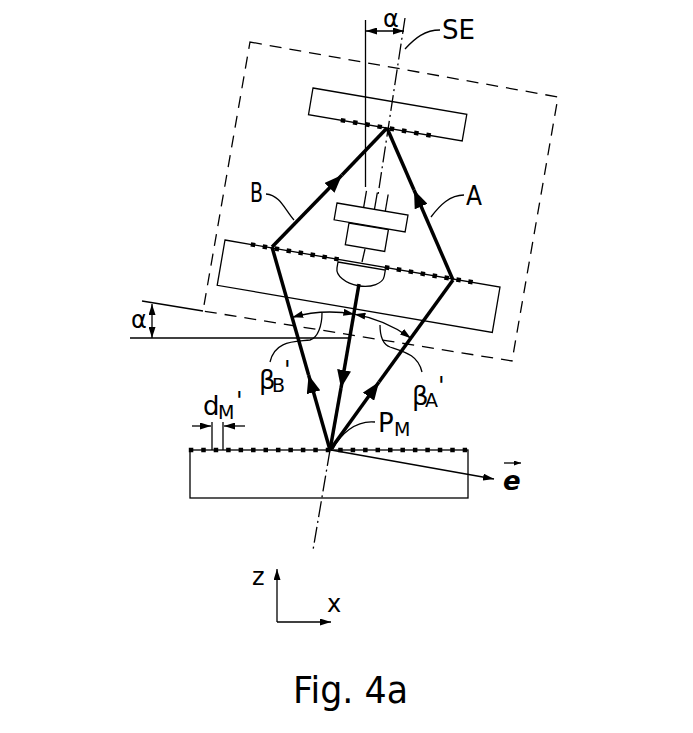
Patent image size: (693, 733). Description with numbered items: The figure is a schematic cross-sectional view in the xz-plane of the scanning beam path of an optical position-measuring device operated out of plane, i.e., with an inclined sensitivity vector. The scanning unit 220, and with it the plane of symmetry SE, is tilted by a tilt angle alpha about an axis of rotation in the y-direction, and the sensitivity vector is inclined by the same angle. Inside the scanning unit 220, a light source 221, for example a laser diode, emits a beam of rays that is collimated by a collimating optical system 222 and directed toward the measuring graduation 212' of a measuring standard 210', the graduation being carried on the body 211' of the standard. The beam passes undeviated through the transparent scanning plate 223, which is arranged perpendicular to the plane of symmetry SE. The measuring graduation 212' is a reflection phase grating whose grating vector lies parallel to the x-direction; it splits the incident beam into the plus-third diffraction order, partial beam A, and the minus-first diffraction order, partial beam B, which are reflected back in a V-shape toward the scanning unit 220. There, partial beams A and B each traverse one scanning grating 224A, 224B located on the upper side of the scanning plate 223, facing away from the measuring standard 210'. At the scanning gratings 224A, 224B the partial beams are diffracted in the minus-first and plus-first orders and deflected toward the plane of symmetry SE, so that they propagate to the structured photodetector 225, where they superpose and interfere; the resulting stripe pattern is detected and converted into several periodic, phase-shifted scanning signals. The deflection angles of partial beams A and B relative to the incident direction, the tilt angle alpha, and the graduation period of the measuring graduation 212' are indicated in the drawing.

The scanning unit 220 is at (214, 104).
The light source 221 is at (336, 205).
The collimating optical system 222 is at (340, 280).
The scanning plate 223 is at (489, 313).
The scanning grating 224A is at (478, 282).
The scanning grating 224B is at (254, 244).
The structured photodetector 225 is at (463, 124).
The measuring standard 210' is at (286, 502).
The scale carrier body 211' is at (329, 506).
The measuring graduation 212' is at (286, 433).